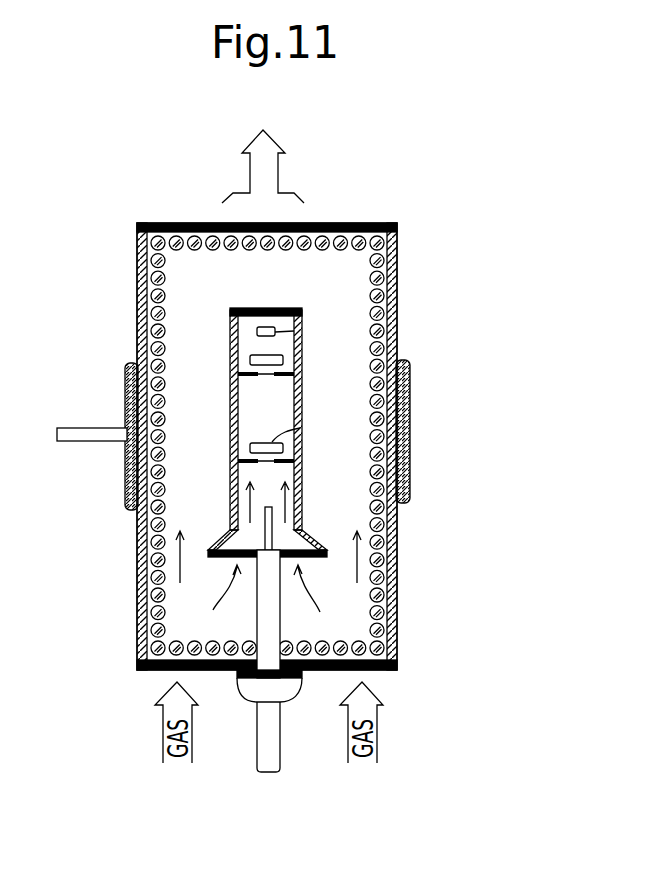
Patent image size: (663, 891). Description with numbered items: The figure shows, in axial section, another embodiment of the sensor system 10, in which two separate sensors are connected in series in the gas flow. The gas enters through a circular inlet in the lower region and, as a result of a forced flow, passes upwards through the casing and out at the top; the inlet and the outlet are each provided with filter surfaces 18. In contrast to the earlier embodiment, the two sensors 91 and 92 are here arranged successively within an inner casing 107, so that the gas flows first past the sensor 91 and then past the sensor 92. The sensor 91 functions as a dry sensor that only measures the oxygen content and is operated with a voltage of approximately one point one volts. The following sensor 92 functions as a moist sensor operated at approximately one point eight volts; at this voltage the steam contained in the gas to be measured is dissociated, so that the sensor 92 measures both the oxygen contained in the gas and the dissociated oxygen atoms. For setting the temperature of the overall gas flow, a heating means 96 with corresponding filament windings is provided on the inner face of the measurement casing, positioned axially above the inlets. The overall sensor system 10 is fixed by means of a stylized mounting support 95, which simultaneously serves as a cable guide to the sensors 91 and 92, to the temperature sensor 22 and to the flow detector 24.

The sensor system 10 is at (405, 216).
The filter surfaces 18 is at (172, 224).
The temperature sensor 22 is at (272, 527).
The flow detector 24 is at (305, 311).
The sensor 91 is at (302, 429).
The sensor 92 is at (277, 355).
The mounting support 95 is at (80, 438).
The heating means 96 is at (388, 310).
The inner casing 107 is at (231, 405).